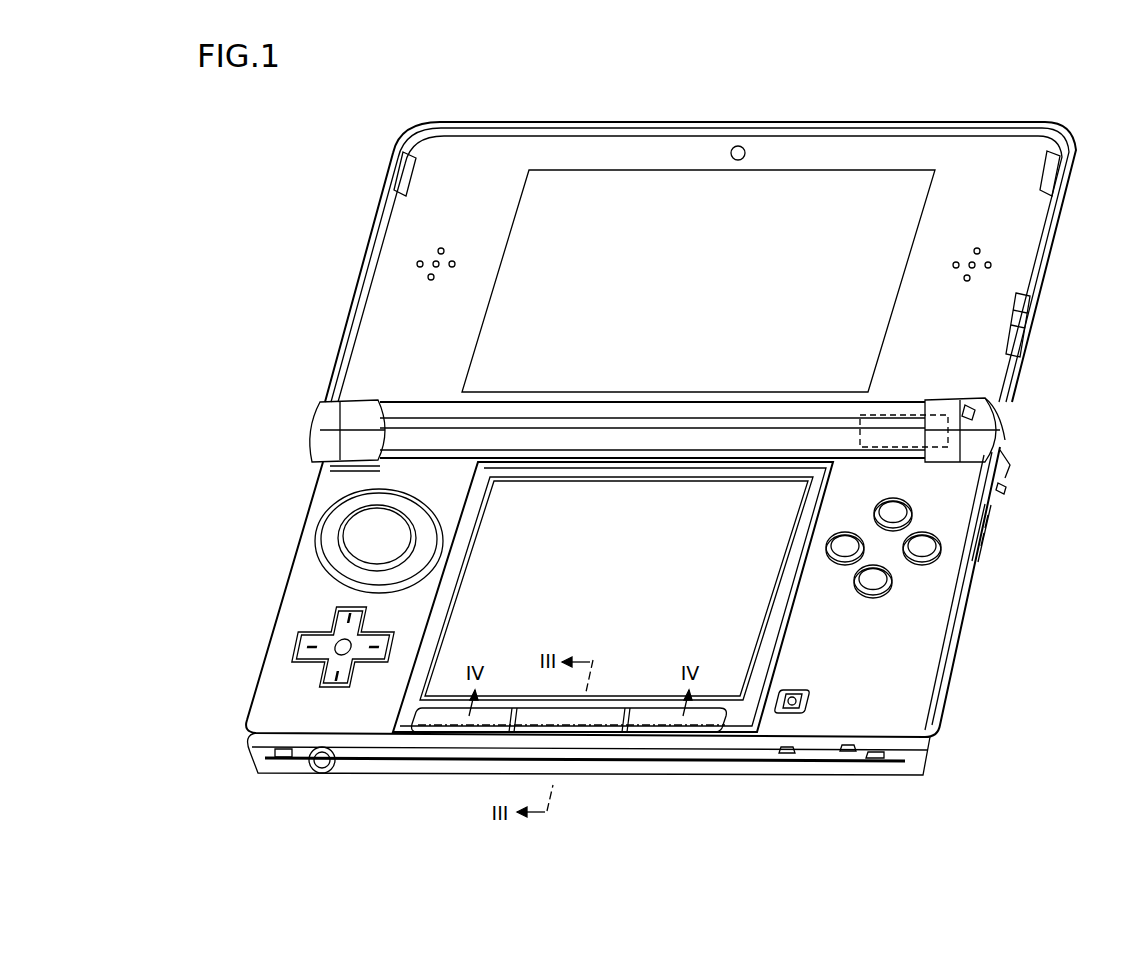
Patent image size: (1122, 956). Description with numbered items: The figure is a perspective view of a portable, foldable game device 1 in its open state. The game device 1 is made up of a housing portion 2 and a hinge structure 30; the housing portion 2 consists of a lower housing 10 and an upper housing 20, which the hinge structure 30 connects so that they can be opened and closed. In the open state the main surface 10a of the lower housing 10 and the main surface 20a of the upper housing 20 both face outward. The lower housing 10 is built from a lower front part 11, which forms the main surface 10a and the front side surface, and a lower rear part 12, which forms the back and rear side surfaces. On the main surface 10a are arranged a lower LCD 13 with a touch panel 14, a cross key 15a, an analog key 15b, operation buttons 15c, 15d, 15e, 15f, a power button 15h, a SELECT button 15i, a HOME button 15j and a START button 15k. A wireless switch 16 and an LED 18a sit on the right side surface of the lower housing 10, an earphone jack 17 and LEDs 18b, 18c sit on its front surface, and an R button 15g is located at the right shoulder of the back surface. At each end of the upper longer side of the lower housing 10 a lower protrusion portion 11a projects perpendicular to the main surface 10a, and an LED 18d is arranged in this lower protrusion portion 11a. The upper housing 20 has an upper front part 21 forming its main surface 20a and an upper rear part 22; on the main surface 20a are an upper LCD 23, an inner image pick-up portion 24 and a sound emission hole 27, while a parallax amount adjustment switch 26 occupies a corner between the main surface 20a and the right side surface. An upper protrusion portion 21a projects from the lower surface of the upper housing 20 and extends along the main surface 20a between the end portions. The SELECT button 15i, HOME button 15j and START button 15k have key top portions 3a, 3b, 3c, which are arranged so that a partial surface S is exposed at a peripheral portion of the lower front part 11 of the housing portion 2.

The game device 1 is at (1082, 122).
The housing portion 2 is at (288, 698).
The key top portion 3a is at (500, 718).
The key top portion 3b is at (600, 720).
The key top portion 3c is at (705, 718).
The partial surface S is at (628, 722).
The lower housing 10 is at (860, 718).
The main surface 10a is at (340, 496).
The lower front part 11 is at (935, 686).
The lower protrusion portion 11a is at (345, 418).
The lower rear part 12 is at (943, 712).
The lower LCD 13 is at (450, 668).
The touch panel 14 is at (713, 650).
The cross key 15a is at (342, 647).
The analog key 15b is at (370, 540).
The operation button 15c is at (912, 512).
The operation button 15d is at (940, 547).
The operation button 15e is at (890, 580).
The operation button 15f is at (862, 548).
The R button 15g is at (1005, 455).
The power button 15h is at (805, 690).
The SELECT button 15i is at (428, 720).
The HOME button 15j is at (533, 718).
The START button 15k is at (655, 720).
The wireless switch 16 is at (985, 530).
The earphone jack 17 is at (322, 773).
The LED 18a is at (1000, 488).
The LED 18b is at (848, 754).
The LED 18c is at (787, 756).
The LED 18d is at (985, 405).
The upper housing 20 is at (1005, 155).
The main surface 20a is at (385, 338).
The upper front part 21 is at (1020, 215).
The upper protrusion portion 21a is at (425, 410).
The upper rear part 22 is at (1058, 262).
The upper LCD 23 is at (780, 195).
The inner image pick-up portion 24 is at (739, 146).
The parallax amount adjustment switch 26 is at (1030, 300).
The sound emission hole 27 is at (415, 262).
The hinge structure 30 is at (950, 435).